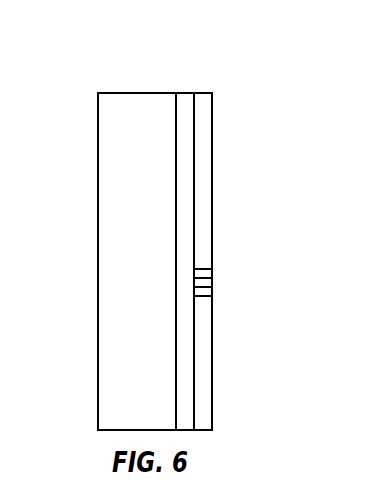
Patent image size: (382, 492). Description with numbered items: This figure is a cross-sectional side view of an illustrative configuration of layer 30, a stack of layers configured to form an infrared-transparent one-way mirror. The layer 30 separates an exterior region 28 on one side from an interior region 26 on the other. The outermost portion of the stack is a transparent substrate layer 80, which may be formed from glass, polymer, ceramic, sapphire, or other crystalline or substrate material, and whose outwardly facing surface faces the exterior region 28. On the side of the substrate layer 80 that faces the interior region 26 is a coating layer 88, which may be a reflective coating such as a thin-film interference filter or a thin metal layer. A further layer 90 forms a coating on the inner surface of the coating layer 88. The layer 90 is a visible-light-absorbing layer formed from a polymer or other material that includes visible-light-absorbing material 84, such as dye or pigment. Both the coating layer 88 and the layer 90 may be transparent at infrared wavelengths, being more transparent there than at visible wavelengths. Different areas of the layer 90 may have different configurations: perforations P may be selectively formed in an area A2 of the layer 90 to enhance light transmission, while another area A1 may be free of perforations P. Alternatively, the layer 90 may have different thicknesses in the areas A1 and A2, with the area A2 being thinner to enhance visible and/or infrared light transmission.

The layer 30 is at (158, 77).
The exterior region 28 is at (91, 111).
The interior region 26 is at (219, 109).
The substrate layer 80 is at (110, 335).
The coating layer 88 is at (182, 390).
The layer 90 is at (205, 371).
The material 84 is at (206, 158).
The perforations P is at (194, 274).
The area A1 is at (219, 225).
The area A2 is at (219, 266).